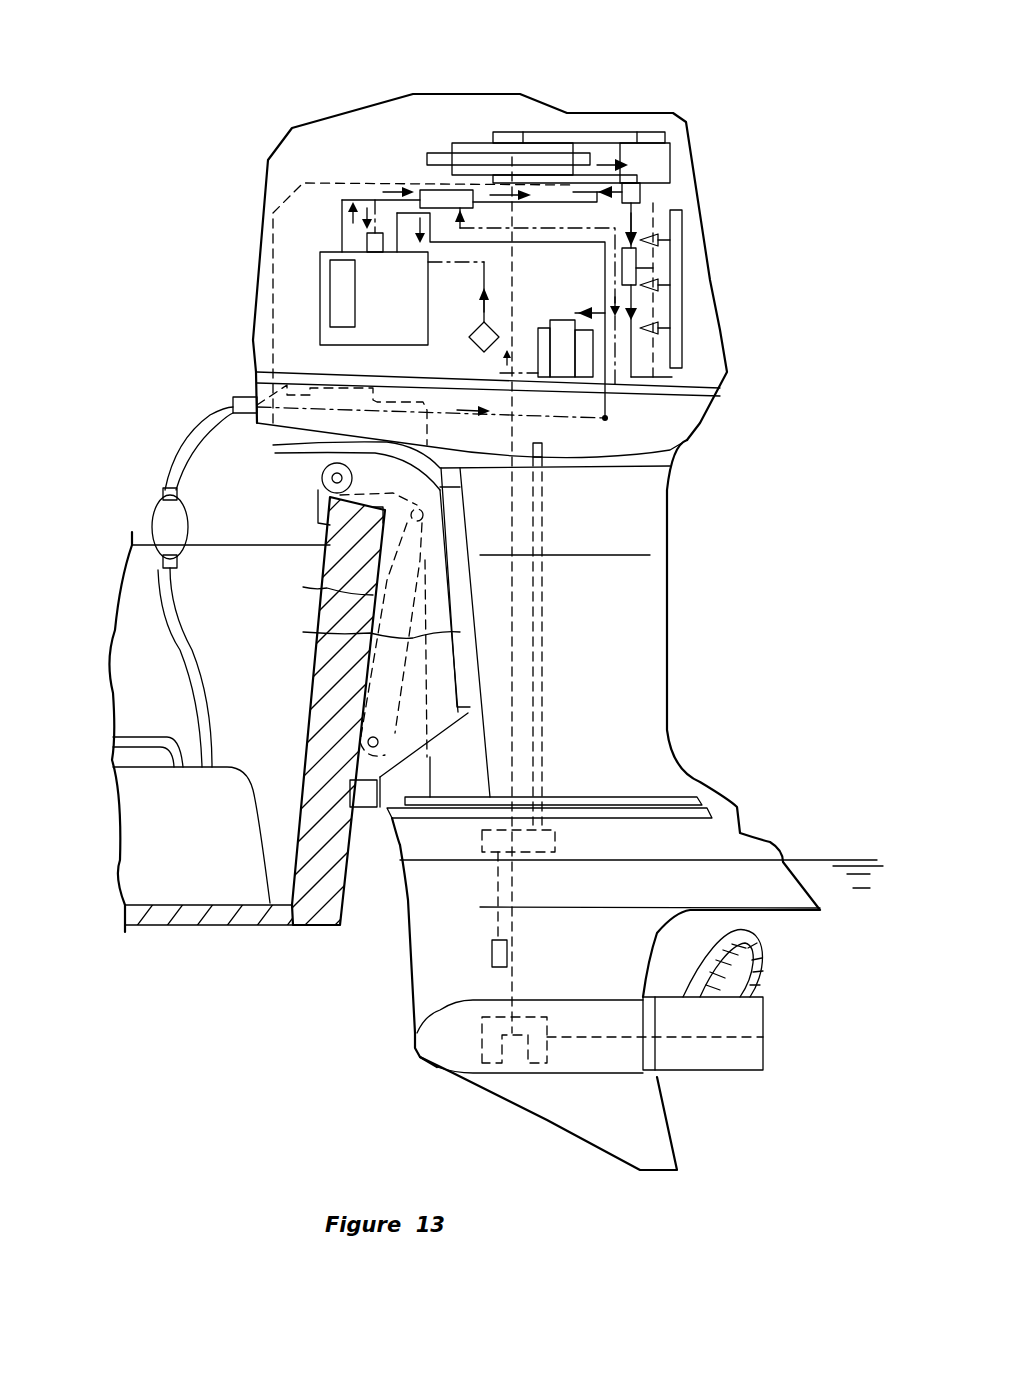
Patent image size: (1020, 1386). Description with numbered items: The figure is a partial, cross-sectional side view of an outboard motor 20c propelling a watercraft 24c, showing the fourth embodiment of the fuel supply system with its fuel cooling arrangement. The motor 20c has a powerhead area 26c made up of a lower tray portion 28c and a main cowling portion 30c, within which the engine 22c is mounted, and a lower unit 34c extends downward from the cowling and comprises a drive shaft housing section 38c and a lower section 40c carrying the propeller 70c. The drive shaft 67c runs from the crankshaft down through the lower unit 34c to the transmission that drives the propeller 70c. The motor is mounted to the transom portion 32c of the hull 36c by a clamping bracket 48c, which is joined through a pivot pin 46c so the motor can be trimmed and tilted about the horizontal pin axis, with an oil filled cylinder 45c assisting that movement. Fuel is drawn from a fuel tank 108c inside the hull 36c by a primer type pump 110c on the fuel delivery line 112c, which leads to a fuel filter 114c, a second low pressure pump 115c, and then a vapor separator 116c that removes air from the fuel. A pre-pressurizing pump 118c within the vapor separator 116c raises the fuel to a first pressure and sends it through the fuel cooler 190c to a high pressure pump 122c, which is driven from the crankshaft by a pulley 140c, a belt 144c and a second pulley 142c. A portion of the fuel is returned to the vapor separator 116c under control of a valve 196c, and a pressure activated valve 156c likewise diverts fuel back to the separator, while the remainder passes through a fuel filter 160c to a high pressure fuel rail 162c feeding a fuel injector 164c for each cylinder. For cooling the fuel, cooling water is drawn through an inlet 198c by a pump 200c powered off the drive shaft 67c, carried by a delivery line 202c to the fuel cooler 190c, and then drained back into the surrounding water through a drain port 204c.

The outboard motor 20c is at (240, 190).
The engine 22c is at (288, 186).
The watercraft 24c is at (102, 600).
The powerhead area 26c is at (322, 68).
The lower tray portion 28c is at (690, 440).
The main cowling portion 30c is at (727, 362).
The transom portion 32c is at (315, 853).
The lower unit 34c is at (680, 658).
The hull 36c is at (223, 927).
The drive shaft housing section 38c is at (650, 590).
The lower section 40c is at (730, 843).
The oil filled cylinder 45c is at (363, 703).
The pivot pin 46c is at (321, 478).
The clamping bracket 48c is at (355, 687).
The drive shaft 67c is at (515, 640).
The propeller 70c is at (740, 995).
The fuel tank 108c is at (162, 832).
The primer type pump 110c is at (165, 520).
The fuel delivery line 112c is at (177, 657).
The fuel filter 114c is at (565, 365).
The second low pressure pump 115c is at (484, 352).
The vapor separator 116c is at (320, 285).
The pre-pressurizing pump 118c is at (340, 320).
The high pressure pump 122c is at (663, 167).
The pulley 140c is at (502, 142).
The pulley 142c is at (655, 142).
The belt 144c is at (607, 142).
The pressure activated valve 156c is at (640, 194).
The fuel filter 160c is at (637, 270).
The high pressure fuel rail 162c is at (677, 250).
The fuel injector 164c is at (655, 328).
The fuel cooler 190c is at (430, 198).
The valve 196c is at (373, 242).
The inlet 198c is at (493, 950).
The pump 200c is at (480, 848).
The delivery line 202c is at (547, 743).
The drain port 204c is at (548, 252).